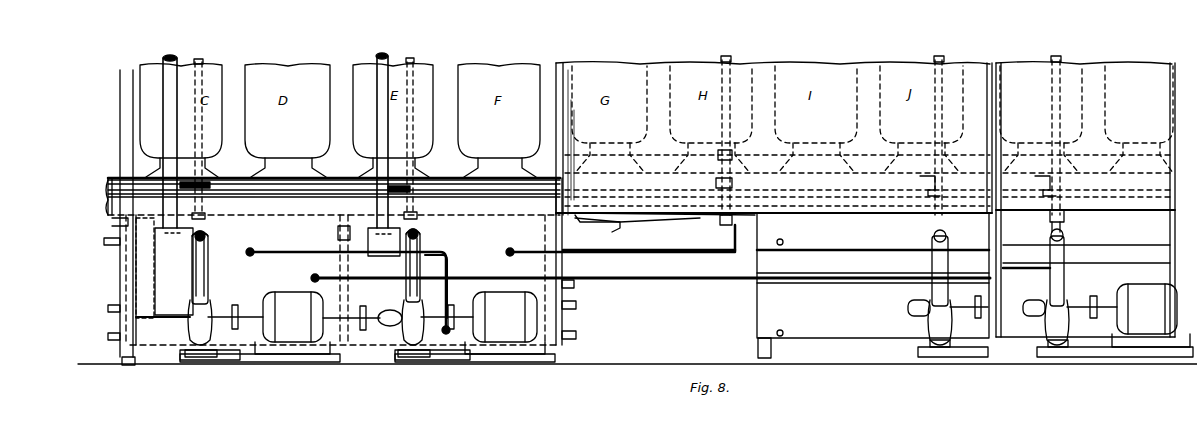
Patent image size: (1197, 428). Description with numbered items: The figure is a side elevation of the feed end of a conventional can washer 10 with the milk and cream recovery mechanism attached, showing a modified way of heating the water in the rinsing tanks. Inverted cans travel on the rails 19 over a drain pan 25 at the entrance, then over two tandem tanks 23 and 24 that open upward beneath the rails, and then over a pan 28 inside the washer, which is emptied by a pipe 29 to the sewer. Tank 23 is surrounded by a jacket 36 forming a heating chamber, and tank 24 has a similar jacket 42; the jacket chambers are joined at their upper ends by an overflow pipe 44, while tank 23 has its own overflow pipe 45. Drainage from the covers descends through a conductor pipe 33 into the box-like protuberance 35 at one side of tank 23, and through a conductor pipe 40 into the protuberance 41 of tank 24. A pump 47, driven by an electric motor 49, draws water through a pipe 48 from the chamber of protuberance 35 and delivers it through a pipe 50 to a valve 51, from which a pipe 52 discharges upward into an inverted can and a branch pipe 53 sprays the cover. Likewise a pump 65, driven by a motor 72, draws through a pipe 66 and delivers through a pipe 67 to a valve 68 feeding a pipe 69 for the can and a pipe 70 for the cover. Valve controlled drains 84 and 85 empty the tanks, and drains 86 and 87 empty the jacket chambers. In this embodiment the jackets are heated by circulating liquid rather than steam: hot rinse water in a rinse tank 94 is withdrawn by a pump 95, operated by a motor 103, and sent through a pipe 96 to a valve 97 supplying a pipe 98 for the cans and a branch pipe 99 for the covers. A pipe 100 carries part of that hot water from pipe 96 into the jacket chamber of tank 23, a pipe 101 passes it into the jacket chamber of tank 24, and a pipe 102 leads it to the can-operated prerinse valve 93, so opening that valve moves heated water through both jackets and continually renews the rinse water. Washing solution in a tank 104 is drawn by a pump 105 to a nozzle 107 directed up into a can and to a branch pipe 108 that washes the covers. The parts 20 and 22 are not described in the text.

The can washer 10 is at (765, 70).
The rails 19 is at (228, 184).
The supporting rail 20 is at (327, 196).
The shelf 22 is at (465, 179).
The tank 23 is at (140, 262).
The tank 24 is at (545, 232).
The drain pan 25 is at (112, 188).
The pan 28 is at (626, 214).
The pipe 29 is at (597, 226).
The conductor pipe 33 is at (165, 98).
The box-like protuberance 35 is at (174, 185).
The jacket 36 is at (126, 224).
The conductor pipe 40 is at (377, 118).
The box-like protuberance 41 is at (410, 293).
The jacket 42 is at (580, 285).
The overflow pipe 44 is at (338, 233).
The overflow pipe 45 is at (104, 242).
The pump 47 is at (198, 330).
The pipe 48 is at (178, 310).
The electric motor 49 is at (260, 327).
The pipe 50 is at (205, 252).
The valve 51 is at (207, 216).
The pipe 52 is at (185, 182).
The branch pipe 53 is at (204, 61).
The pump 65 is at (413, 330).
The pipe 66 is at (394, 322).
The pipe 67 is at (403, 268).
The valve 68 is at (420, 215).
The pipe 69 is at (395, 192).
The pipe 70 is at (415, 60).
The motor 72 is at (545, 310).
The valve controlled drain 84 is at (108, 308).
The valve controlled drain 85 is at (578, 305).
The valve controlled drain 86 is at (108, 336).
The valve controlled drain 87 is at (578, 335).
The prerinse valve 93 is at (720, 222).
The rinse tank 94 is at (1070, 287).
The pump 95 is at (1055, 320).
The pipe 96 is at (1062, 258).
The valve 97 is at (1066, 224).
The pipe 98 is at (1043, 198).
The branch pipe 99 is at (1051, 58).
The pipe 100 is at (468, 276).
The pipe 101 is at (278, 253).
The pipe 102 is at (636, 252).
The motor 103 is at (1151, 315).
The tank 104 is at (924, 287).
The pump 105 is at (938, 320).
The nozzle 107 is at (918, 176).
The branch pipe 108 is at (934, 58).